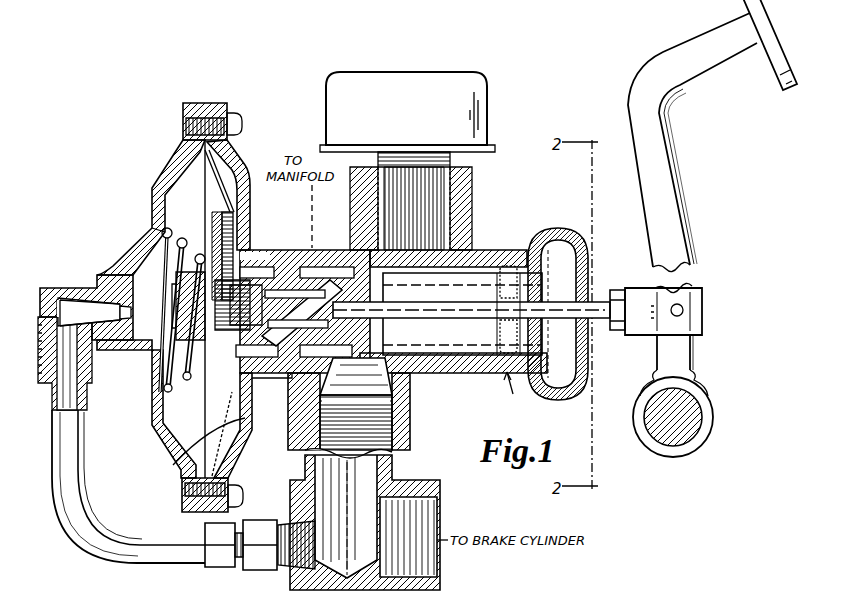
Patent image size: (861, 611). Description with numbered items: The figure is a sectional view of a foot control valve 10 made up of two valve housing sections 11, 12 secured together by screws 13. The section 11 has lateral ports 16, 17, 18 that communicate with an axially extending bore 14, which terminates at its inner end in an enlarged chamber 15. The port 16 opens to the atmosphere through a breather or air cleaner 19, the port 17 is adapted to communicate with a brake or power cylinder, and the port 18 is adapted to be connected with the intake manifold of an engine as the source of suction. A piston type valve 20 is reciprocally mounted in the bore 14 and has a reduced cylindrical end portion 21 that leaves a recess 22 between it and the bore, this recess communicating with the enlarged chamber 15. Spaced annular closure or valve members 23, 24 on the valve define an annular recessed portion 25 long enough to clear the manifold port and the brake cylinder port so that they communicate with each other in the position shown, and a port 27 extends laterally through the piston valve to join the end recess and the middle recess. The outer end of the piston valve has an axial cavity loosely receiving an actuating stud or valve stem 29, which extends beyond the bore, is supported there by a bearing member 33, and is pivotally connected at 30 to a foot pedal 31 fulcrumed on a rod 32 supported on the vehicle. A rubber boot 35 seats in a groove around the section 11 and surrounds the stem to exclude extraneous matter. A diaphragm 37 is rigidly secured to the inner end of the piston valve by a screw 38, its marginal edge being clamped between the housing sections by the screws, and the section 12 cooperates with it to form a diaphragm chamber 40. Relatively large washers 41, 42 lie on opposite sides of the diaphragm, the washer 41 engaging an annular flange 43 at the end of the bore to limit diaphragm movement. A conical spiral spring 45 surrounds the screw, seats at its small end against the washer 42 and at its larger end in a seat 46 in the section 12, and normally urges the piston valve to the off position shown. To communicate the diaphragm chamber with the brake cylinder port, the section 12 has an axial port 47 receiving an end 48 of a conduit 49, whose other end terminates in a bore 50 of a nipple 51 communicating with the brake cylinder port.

The foot control valve 10 is at (175, 162).
The valve housing section 11 is at (517, 390).
The valve housing section 12 is at (150, 186).
The screws 13 is at (236, 120).
The axially extending bore 14 is at (470, 355).
The enlarged chamber 15 is at (222, 462).
The port 16 is at (432, 244).
The port 17 is at (372, 378).
The port 18 is at (310, 275).
The breather or air cleaner 19 is at (452, 78).
The piston type valve 20 is at (398, 333).
The reduced cylindrical end portion 21 is at (258, 266).
The recess 22 is at (250, 248).
The annular closure or valve member 23 is at (288, 265).
The annular closure or valve member 24 is at (320, 262).
The annular recessed portion 25 is at (290, 380).
The port 27 is at (262, 357).
The actuating stud or valve stem 29 is at (598, 300).
The pivotal connection 30 is at (684, 310).
The foot pedal 31 is at (643, 76).
The rod 32 is at (700, 425).
The bearing member 33 is at (507, 285).
The rubber boot 35 is at (562, 388).
The diaphragm 37 is at (180, 456).
The screw 38 is at (203, 262).
The diaphragm chamber 40 is at (146, 409).
The washer 41 is at (236, 440).
The washer 42 is at (222, 210).
The annular flange 43 is at (240, 205).
The conical spiral spring 45 is at (158, 378).
The seat 46 is at (152, 236).
The axial port 47 is at (148, 300).
The end of conduit 48 is at (57, 402).
The conduit 49 is at (60, 497).
The bore 50 is at (347, 516).
The nipple 51 is at (400, 594).